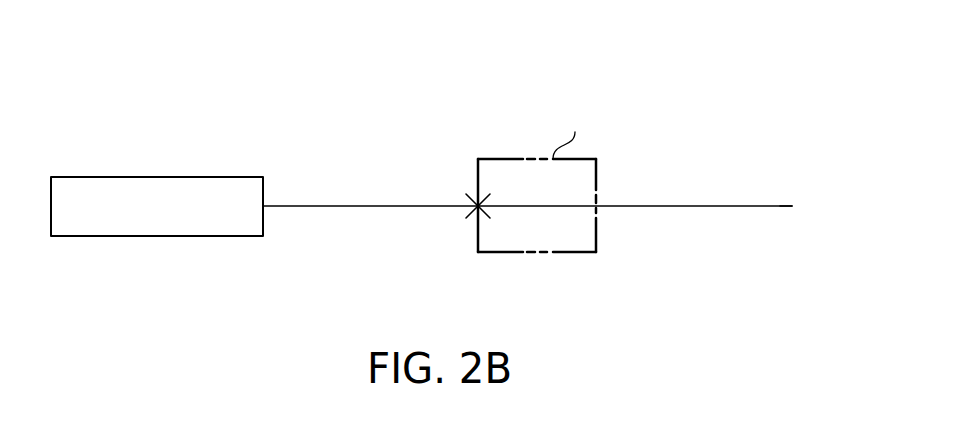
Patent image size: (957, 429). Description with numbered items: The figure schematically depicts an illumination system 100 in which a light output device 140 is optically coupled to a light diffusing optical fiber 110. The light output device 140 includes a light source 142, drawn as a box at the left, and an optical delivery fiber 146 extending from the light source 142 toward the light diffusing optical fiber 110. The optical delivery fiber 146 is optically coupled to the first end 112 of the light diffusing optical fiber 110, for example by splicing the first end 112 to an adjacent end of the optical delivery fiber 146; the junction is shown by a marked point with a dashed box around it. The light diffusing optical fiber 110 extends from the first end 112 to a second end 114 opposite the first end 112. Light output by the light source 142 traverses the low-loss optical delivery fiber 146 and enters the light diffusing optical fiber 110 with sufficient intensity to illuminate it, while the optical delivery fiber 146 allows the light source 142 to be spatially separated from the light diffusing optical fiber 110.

The illumination system 100 is at (686, 121).
The light diffusing optical fiber 110 is at (692, 206).
The first end 112 is at (466, 189).
The second end 114 is at (801, 216).
The light output device 140 is at (247, 154).
The light source 142 is at (162, 176).
The optical delivery fiber 146 is at (317, 207).